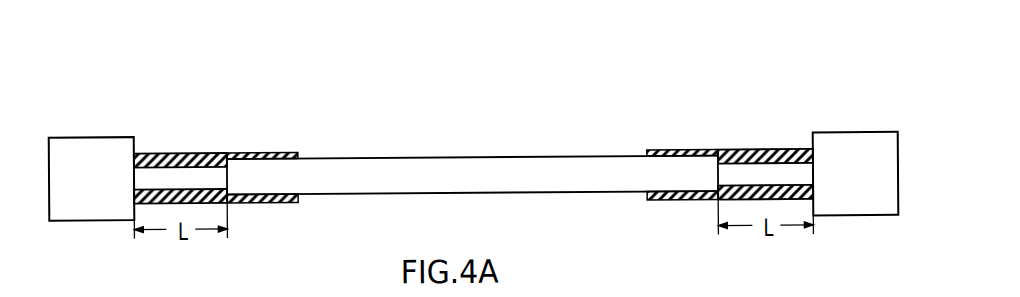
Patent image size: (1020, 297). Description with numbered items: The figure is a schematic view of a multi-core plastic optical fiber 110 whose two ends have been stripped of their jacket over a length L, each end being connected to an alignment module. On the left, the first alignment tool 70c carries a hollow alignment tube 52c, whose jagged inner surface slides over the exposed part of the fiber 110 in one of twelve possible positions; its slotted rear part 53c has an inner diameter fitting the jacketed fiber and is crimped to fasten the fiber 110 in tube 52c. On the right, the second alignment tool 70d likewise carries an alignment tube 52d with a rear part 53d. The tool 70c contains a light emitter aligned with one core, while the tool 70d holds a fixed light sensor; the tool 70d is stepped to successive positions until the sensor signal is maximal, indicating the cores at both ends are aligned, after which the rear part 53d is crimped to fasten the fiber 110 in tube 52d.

The first alignment tool 70c is at (158, 100).
The second alignment tool 70d is at (785, 102).
The alignment tube 52c is at (197, 150).
The alignment tube 52d is at (740, 151).
The rear part of alignment tube 53c is at (288, 150).
The rear part of alignment tube 53d is at (660, 151).
The multi-core plastic optical fiber 110 is at (448, 193).